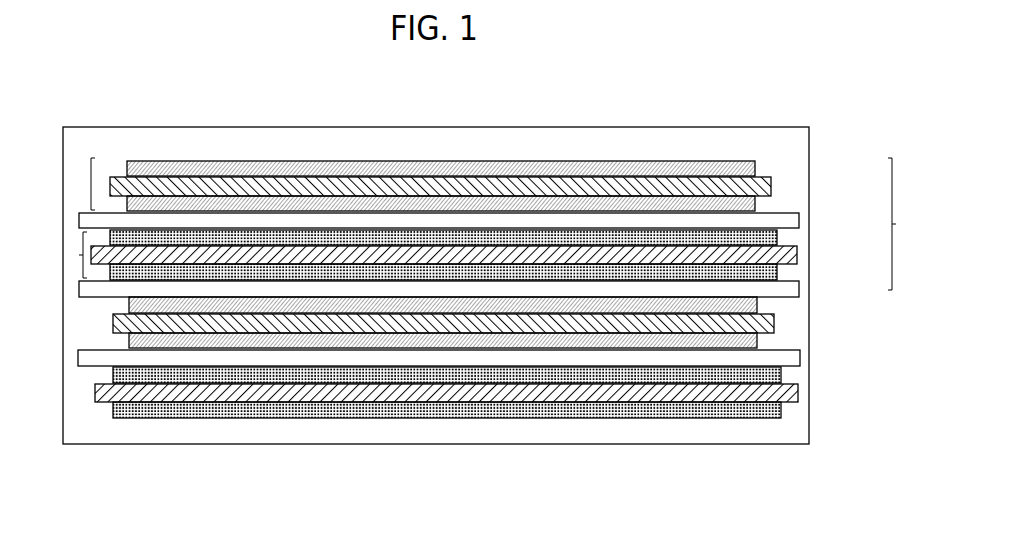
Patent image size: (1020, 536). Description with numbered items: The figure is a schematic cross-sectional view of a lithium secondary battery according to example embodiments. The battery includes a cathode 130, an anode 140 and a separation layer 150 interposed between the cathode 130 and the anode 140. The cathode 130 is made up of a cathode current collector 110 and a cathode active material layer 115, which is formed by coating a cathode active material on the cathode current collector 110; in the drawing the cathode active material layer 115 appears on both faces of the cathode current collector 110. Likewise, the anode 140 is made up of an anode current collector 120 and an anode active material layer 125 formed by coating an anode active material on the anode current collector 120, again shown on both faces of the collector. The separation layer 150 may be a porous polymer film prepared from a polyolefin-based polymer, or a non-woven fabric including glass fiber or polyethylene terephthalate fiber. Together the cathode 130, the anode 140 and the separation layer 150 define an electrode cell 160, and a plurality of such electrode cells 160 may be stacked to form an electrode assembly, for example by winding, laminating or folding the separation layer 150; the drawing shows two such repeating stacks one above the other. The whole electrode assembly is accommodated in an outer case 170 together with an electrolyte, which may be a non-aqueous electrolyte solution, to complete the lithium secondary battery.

The cathode current collector 110 is at (772, 185).
The cathode active material layer 115 is at (756, 164).
The anode current collector 120 is at (798, 257).
The anode active material layer 125 is at (778, 238).
The cathode 130 is at (89, 177).
The anode 140 is at (79, 267).
The separation layer 150 is at (78, 221).
The electrode cell 160 is at (905, 224).
The outer case 170 is at (191, 444).